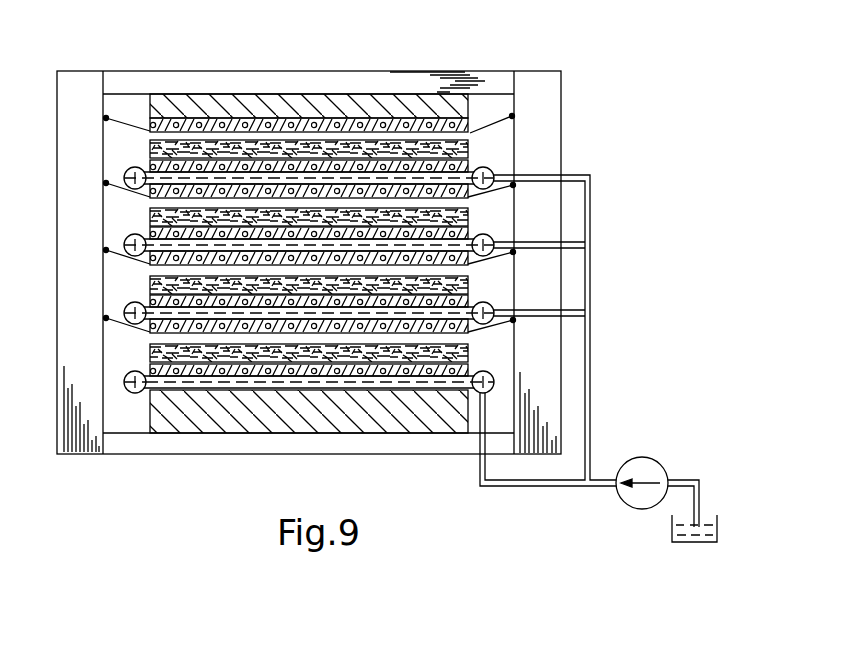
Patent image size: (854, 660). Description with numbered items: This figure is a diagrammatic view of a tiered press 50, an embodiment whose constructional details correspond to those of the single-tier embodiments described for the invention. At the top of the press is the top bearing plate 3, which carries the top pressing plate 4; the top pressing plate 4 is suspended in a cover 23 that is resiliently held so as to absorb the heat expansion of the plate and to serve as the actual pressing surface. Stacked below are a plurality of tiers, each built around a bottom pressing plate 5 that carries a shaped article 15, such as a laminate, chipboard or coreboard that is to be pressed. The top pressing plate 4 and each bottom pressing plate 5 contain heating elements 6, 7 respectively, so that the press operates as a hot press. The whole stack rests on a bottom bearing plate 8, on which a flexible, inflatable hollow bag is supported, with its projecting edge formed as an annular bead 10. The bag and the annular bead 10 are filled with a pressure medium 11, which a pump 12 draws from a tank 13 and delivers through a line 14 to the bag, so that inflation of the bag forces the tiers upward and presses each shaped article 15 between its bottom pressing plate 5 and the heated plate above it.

The top bearing plate 3 is at (378, 100).
The top pressing plate 4 is at (373, 330).
The bottom pressing plate 5 is at (390, 377).
The heating elements 6 is at (453, 340).
The heating elements 7 is at (285, 378).
The bottom bearing plate 8 is at (252, 423).
The annular bead 10 is at (126, 389).
The pressure medium 11 is at (138, 390).
The pump 12 is at (638, 457).
The tank 13 is at (672, 530).
The line 14 is at (480, 479).
The shaped article 15 is at (150, 148).
The cover 23 is at (480, 128).
The tiered press 50 is at (552, 90).